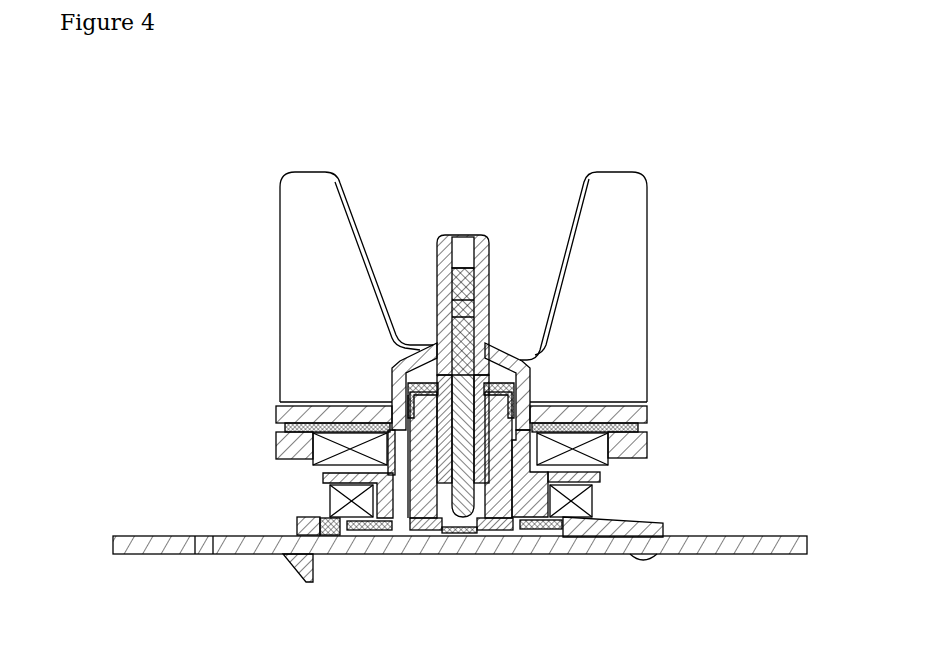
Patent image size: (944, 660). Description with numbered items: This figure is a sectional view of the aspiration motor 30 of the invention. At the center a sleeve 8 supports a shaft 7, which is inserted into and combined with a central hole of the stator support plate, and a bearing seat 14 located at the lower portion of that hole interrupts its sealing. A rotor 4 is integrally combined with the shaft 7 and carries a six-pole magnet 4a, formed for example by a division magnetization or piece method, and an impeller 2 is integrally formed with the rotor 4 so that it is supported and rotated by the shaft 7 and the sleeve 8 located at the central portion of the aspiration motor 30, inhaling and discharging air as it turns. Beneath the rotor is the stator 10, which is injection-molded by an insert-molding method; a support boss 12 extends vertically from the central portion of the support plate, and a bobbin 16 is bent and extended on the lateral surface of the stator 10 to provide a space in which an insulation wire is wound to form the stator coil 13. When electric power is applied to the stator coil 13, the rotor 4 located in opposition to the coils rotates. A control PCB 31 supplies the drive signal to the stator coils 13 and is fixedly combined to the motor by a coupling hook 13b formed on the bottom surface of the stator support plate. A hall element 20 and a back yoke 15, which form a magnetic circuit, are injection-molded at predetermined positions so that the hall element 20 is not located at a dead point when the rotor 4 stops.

The aspiration motor 30 is at (676, 162).
The impeller 2 is at (638, 289).
The shaft 7 is at (465, 342).
The rotor 4 is at (259, 419).
The 6-pole magnet 4a is at (603, 447).
The stator 10 is at (298, 480).
The support boss 12 is at (398, 537).
The bobbin 16 is at (596, 474).
The stator coil 13 is at (597, 500).
The coupling hook 13b is at (291, 560).
The hall element 20 is at (330, 540).
The bearing seat 14 is at (500, 533).
The sleeve 8 is at (478, 535).
The back yoke 15 is at (538, 531).
The control PCB 31 is at (722, 549).